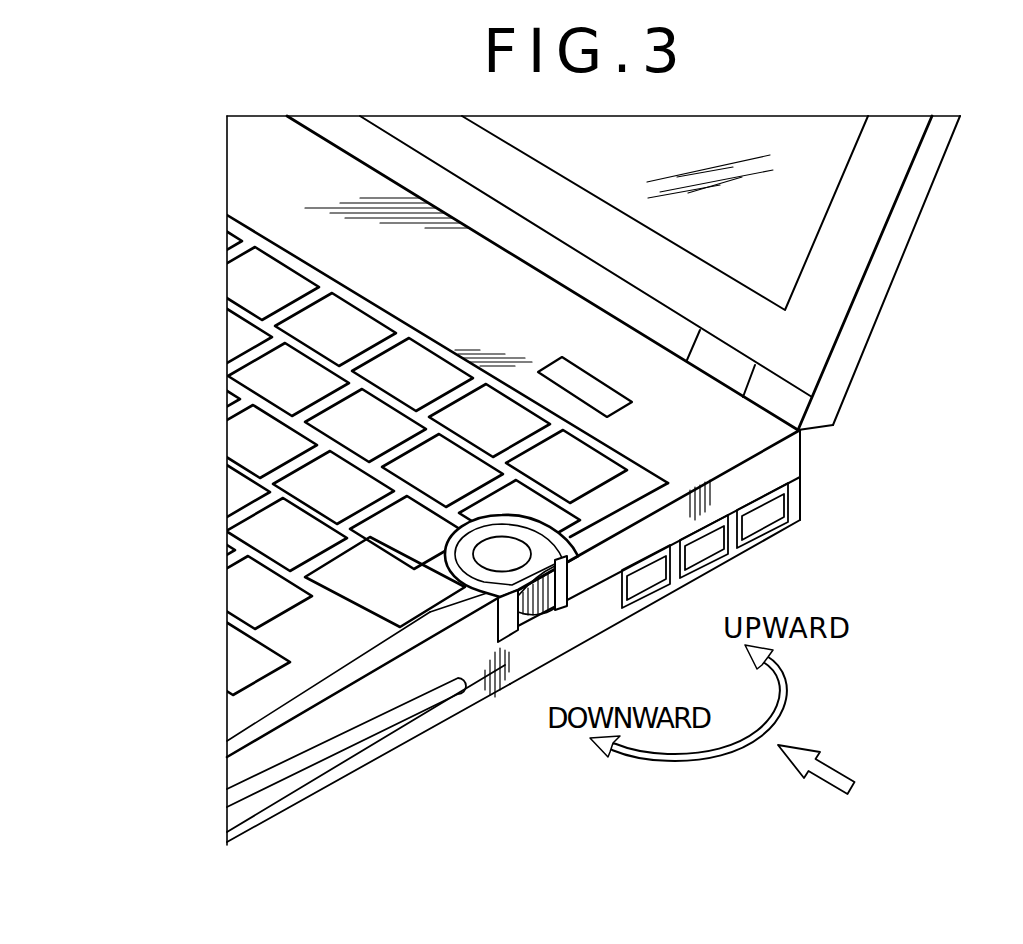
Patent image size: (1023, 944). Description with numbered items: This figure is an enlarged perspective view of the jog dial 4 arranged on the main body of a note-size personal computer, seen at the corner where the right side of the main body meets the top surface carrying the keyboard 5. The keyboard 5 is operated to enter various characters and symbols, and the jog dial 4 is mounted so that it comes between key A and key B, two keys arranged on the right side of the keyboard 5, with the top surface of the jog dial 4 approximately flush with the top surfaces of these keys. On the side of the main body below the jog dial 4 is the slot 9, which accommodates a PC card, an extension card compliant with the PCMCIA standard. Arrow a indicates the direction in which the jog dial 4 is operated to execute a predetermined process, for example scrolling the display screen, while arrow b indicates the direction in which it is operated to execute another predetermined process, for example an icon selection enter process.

The keyboard 5 is at (256, 437).
The jog dial 4 is at (592, 565).
The slot 9 is at (258, 803).
The key A is at (508, 543).
The key B is at (400, 610).
The arrow a is at (698, 701).
The arrow b is at (816, 778).